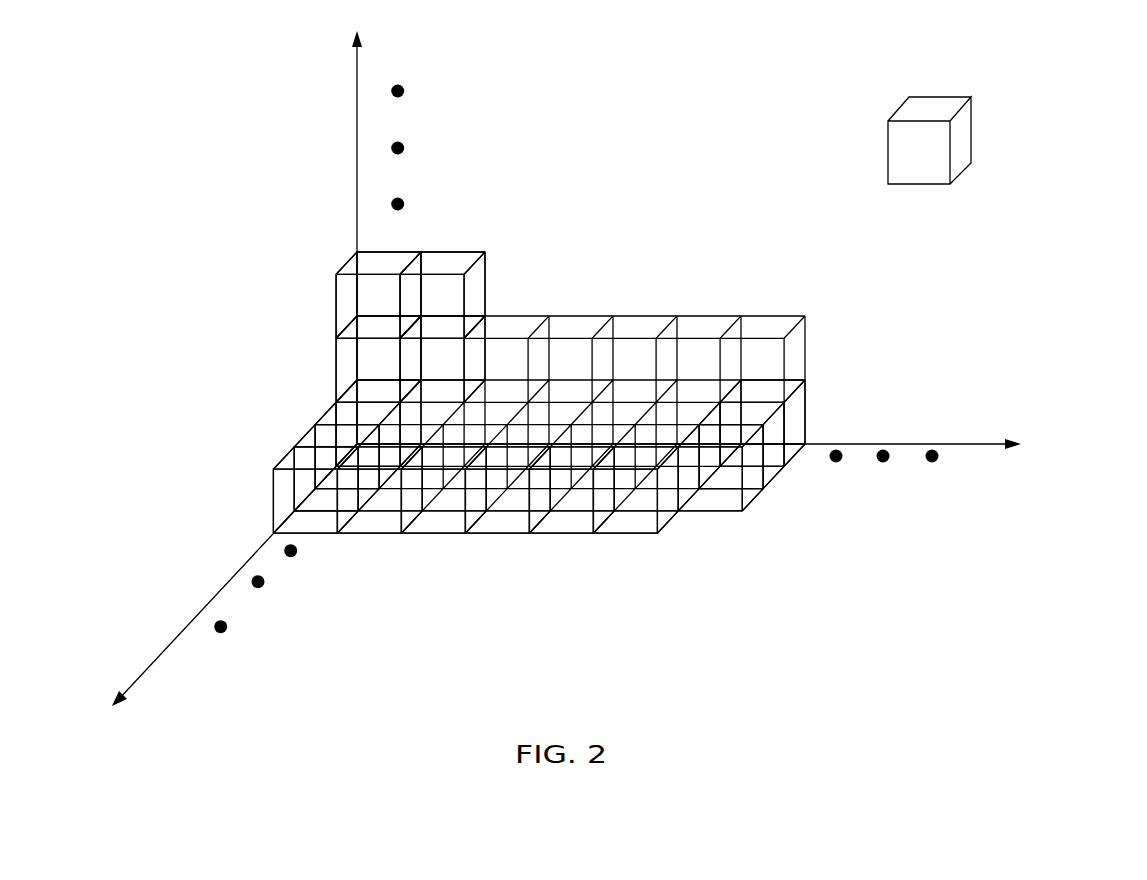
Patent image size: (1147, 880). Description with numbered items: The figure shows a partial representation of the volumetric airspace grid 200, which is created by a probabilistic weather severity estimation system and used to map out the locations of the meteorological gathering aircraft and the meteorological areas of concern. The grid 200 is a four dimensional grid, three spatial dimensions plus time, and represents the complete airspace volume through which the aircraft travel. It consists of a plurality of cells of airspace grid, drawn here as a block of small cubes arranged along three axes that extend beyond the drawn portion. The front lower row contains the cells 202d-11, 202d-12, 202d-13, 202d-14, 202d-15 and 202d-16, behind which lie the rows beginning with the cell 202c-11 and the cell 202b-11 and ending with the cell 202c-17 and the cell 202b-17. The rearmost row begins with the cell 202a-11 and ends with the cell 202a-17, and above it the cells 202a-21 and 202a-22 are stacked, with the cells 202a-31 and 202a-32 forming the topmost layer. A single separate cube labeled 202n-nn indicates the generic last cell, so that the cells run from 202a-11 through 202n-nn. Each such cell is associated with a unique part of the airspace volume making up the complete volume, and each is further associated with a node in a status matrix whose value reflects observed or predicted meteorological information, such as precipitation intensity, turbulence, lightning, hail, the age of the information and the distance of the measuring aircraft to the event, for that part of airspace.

The volumetric airspace grid 200 is at (976, 291).
The cell of airspace grid 202a-11 is at (347, 393).
The cell of airspace grid 202a-21 is at (343, 360).
The cell of airspace grid 202a-31 is at (341, 281).
The cell of airspace grid 202a-32 is at (485, 253).
The cell of airspace grid 202a-22 is at (450, 362).
The cell of airspace grid 202a-17 is at (798, 409).
The cell of airspace grid 202b-11 is at (327, 411).
The cell of airspace grid 202b-17 is at (778, 455).
The cell of airspace grid 202c-11 is at (335, 440).
The cell of airspace grid 202c-17 is at (717, 500).
The cell of airspace grid 202d-11 is at (285, 501).
The cell of airspace grid 202d-12 is at (365, 525).
The cell of airspace grid 202d-13 is at (426, 523).
The cell of airspace grid 202d-14 is at (498, 523).
The cell of airspace grid 202d-15 is at (571, 521).
The cell of airspace grid 202d-16 is at (644, 523).
The cell of airspace grid 202n-nn is at (971, 128).